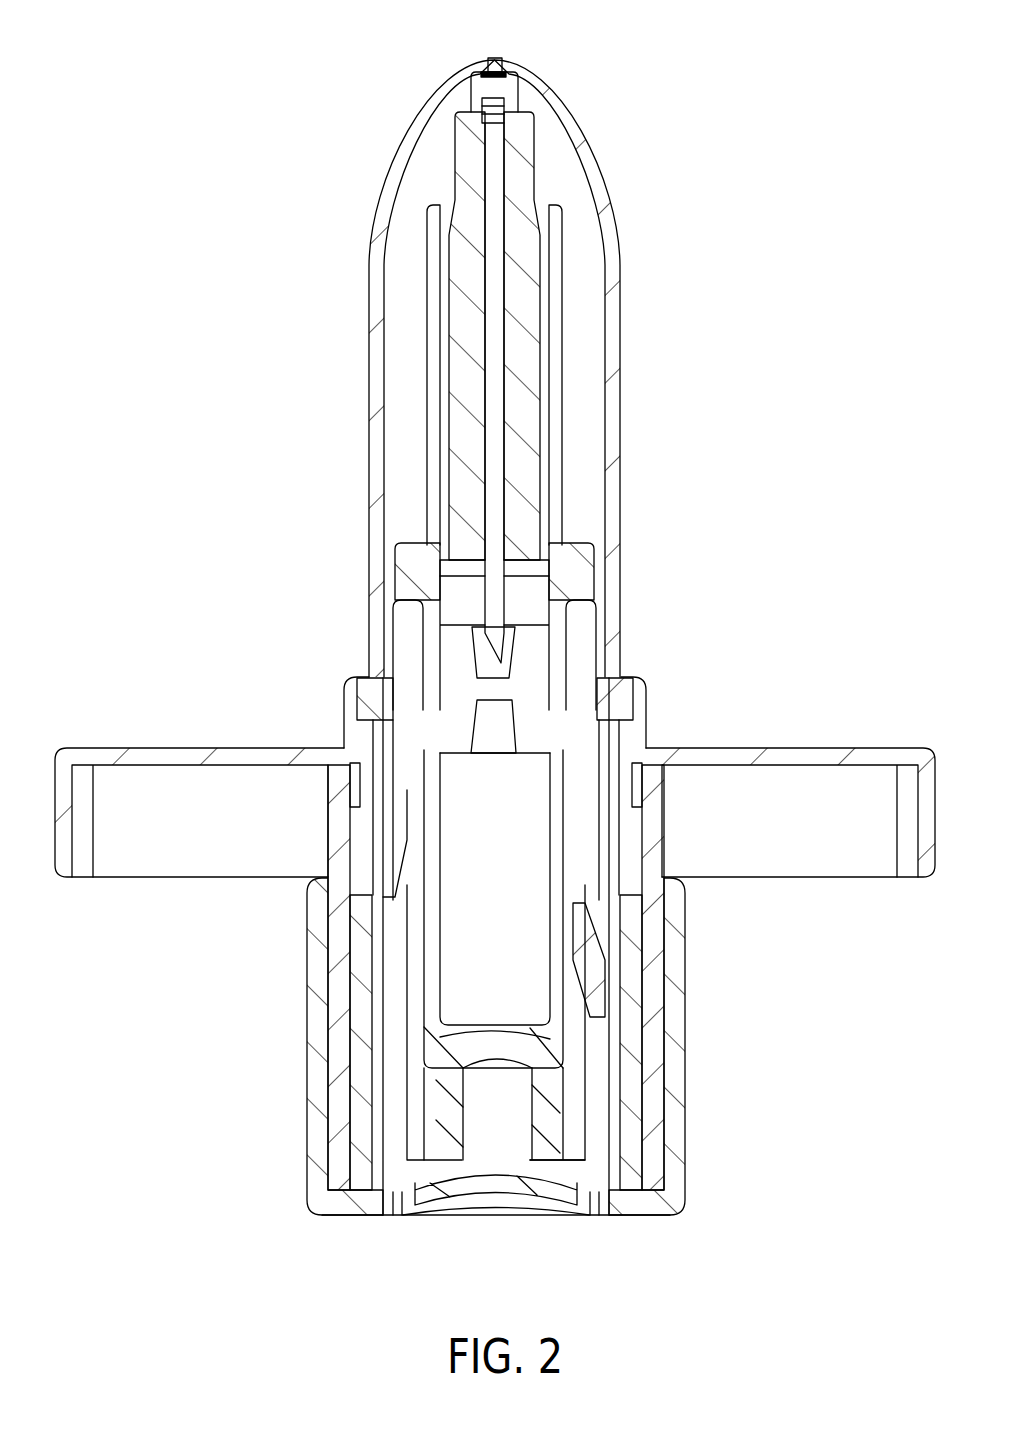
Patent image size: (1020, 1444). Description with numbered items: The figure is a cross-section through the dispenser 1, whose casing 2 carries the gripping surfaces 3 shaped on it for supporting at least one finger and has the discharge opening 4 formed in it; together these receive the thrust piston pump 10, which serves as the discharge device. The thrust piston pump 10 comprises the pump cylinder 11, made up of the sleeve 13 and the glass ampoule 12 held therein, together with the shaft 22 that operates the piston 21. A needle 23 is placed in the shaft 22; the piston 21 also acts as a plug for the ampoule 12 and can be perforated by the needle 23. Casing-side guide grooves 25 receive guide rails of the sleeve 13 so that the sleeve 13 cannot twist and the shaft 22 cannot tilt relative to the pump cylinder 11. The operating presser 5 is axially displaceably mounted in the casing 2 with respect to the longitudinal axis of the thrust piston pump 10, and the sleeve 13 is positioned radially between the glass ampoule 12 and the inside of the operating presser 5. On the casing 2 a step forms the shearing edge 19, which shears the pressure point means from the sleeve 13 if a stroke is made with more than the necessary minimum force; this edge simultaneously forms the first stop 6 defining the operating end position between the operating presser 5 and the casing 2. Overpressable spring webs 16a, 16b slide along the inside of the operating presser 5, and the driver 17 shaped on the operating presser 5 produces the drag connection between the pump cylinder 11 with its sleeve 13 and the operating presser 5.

The dispenser 1 is at (660, 155).
The casing 2 is at (375, 300).
The gripping surfaces 3 is at (130, 743).
The discharge opening 4 is at (495, 52).
The operating presser 5 is at (355, 960).
The first stop 6 is at (372, 674).
The thrust piston pump 10 is at (420, 438).
The pump cylinder 11 is at (412, 526).
The glass ampoule 12 is at (418, 565).
The sleeve 13 is at (405, 630).
The spring web 16a is at (378, 888).
The spring web 16b is at (603, 1003).
The driver 17 is at (612, 740).
The shearing edge 19 is at (345, 700).
The piston 21 is at (545, 600).
The shaft 22 is at (465, 145).
The needle 23 is at (492, 172).
The guide grooves 25 is at (432, 248).